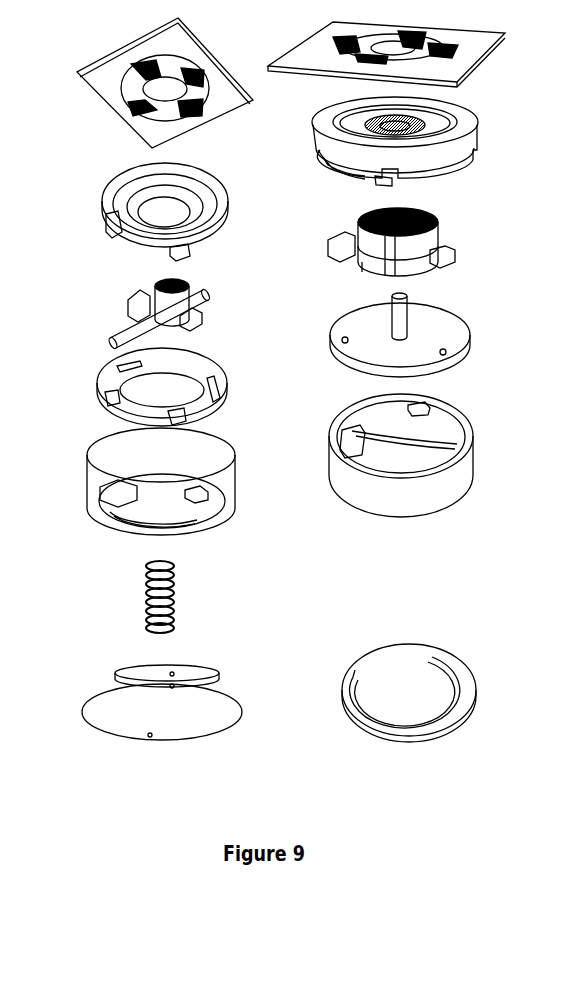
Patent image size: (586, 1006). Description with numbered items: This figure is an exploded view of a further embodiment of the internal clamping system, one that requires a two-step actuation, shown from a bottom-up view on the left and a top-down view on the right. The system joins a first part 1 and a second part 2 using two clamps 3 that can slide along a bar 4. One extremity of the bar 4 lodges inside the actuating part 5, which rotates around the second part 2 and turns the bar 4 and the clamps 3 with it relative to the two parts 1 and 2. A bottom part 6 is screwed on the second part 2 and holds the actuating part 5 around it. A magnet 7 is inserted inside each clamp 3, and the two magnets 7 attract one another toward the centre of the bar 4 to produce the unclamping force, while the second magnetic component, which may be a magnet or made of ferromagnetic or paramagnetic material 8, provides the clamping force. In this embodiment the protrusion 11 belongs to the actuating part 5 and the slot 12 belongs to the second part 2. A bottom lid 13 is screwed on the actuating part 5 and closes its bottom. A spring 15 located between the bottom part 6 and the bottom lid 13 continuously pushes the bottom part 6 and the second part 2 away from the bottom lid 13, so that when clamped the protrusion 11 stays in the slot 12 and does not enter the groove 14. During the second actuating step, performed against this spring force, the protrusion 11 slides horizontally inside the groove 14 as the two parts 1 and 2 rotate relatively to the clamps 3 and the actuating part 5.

The first part 1 is at (270, 74).
The second part 2 is at (255, 182).
The clamps 3 is at (127, 307).
The bar 4 is at (205, 298).
The actuating part 5 is at (308, 450).
The bottom part 6 is at (348, 372).
The magnet 7 is at (398, 222).
The ferromagnetic/paramagnetic material 8 is at (127, 103).
The protrusion 11 is at (200, 497).
The slot 12 is at (125, 205).
The bottom lid 13 is at (337, 707).
The groove 14 is at (333, 170).
The spring 15 is at (193, 602).